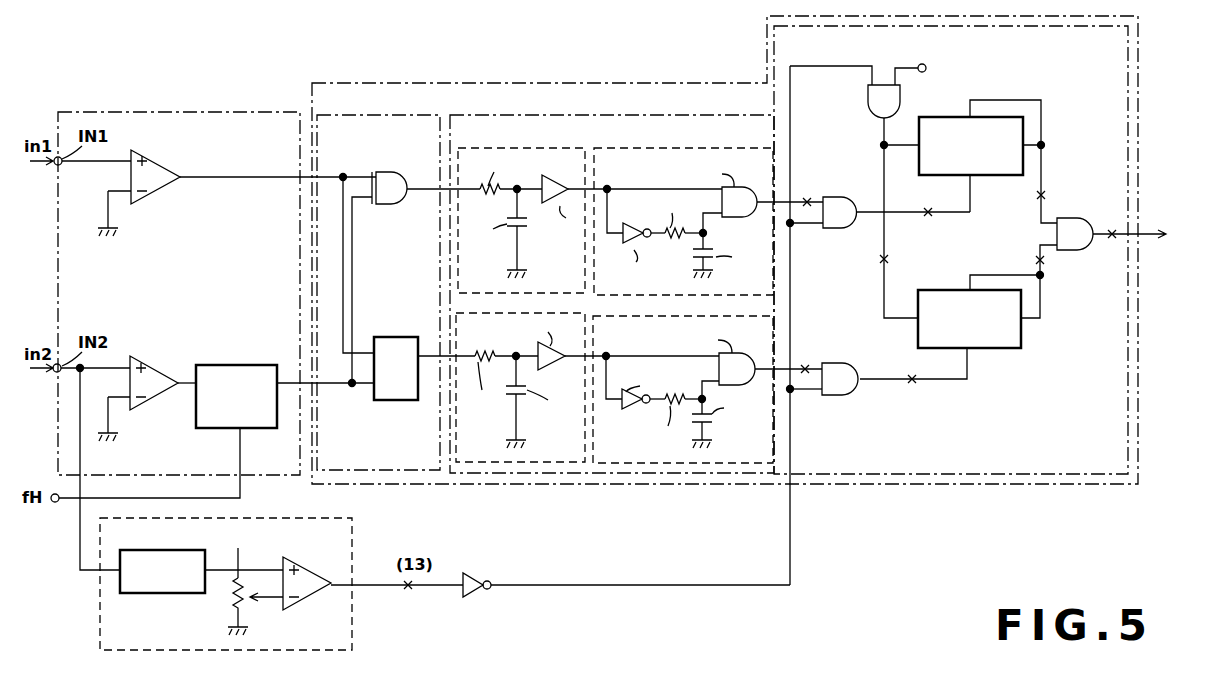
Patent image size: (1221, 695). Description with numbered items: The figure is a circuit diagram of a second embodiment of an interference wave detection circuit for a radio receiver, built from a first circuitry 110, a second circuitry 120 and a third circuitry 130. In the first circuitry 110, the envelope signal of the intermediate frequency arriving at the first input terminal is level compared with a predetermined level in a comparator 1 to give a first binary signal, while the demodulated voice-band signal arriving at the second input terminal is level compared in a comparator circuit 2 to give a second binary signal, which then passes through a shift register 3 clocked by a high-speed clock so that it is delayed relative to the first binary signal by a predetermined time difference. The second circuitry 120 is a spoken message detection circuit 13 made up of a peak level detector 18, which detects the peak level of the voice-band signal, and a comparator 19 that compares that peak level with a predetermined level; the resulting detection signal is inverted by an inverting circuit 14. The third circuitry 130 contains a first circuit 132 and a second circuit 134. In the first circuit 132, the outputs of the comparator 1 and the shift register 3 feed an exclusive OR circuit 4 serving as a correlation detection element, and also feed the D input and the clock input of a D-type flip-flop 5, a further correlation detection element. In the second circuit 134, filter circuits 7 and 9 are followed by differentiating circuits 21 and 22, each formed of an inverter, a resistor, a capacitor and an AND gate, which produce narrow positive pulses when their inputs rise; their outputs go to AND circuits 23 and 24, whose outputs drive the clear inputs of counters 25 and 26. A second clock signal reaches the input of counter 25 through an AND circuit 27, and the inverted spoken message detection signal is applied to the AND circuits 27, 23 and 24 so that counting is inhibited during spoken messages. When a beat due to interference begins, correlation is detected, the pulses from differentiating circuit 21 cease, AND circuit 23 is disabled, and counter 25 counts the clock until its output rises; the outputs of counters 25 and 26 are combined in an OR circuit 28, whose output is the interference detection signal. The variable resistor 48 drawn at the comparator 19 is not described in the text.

The comparator 1 is at (160, 165).
The comparator circuit 2 is at (158, 366).
The shift register 3 is at (256, 365).
The exclusive OR circuit 4 is at (397, 172).
The D-type flip-flop 5 is at (402, 337).
The filter circuit 7 is at (560, 148).
The filter circuit 9 is at (562, 478).
The spoken message detection circuit 13 is at (318, 518).
The inverting circuit 14 is at (476, 574).
The peak level detector 18 is at (172, 550).
The comparator 19 is at (316, 572).
The differentiating circuit 21 is at (741, 152).
The differentiating circuit 22 is at (603, 470).
The AND circuit 23 is at (848, 197).
The AND circuit 24 is at (850, 366).
The counter 25 is at (994, 176).
The counter 26 is at (998, 348).
The AND circuit 27 is at (868, 100).
The OR circuit 28 is at (1086, 220).
The variable resistor 48 is at (228, 594).
The first circuitry 110 is at (265, 112).
The second circuitry 120 is at (352, 631).
The third circuitry 130 is at (767, 36).
The first circuit 132 is at (390, 115).
The second circuit 134 is at (505, 115).